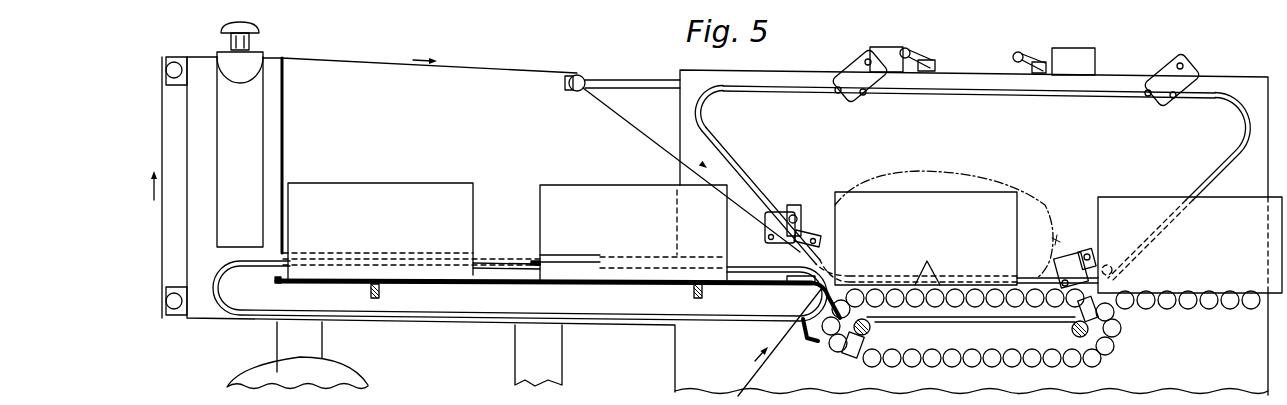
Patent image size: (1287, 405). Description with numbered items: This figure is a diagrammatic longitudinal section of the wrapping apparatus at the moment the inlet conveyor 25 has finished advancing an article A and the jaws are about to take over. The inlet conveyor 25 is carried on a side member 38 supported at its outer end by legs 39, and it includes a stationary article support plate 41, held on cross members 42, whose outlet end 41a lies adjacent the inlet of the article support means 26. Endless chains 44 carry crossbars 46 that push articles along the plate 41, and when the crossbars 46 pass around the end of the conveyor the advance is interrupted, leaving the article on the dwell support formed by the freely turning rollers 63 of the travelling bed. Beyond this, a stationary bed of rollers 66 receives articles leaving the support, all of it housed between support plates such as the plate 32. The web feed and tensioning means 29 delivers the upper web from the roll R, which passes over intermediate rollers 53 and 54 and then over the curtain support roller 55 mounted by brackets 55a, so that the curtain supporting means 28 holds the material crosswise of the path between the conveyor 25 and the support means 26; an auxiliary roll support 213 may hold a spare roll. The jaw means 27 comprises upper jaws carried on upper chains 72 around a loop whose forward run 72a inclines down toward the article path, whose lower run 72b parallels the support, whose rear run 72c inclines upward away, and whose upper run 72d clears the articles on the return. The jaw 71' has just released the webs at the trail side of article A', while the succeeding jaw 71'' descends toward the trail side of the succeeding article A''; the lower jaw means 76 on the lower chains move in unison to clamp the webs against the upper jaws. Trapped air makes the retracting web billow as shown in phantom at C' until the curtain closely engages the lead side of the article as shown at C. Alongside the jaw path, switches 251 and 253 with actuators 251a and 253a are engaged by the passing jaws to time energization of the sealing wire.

The inlet conveyor 25 is at (501, 246).
The article support means 26 is at (987, 283).
The jaw means 27 is at (795, 201).
The curtain supporting means 28 is at (563, 68).
The web feed and tensioning means 29 is at (276, 52).
The support plate 32 is at (1185, 351).
The side member 38 is at (468, 303).
The legs 39 is at (322, 338).
The article support plate 41 is at (598, 286).
The outlet end 41a is at (812, 292).
The cross members 42 is at (705, 298).
The chains 44 is at (596, 255).
The crossbars 46 is at (536, 262).
The intermediate roller 53 is at (164, 300).
The intermediate roller 54 is at (166, 70).
The curtain support roller 55 is at (578, 92).
The brackets 55a is at (623, 80).
The rollers 63 is at (927, 265).
The stationary bed of rollers 66 is at (1190, 293).
The upper jaw means 71' is at (1075, 247).
The succeeding upper jaw means 71'' is at (816, 207).
The upper chains 72 is at (760, 182).
The forward run 72a is at (737, 158).
The lower run 72b is at (896, 277).
The rear run 72c is at (1195, 178).
The upper run 72d is at (1014, 93).
The lower jaw means 76 is at (1105, 295).
The auxiliary roll support 213 is at (560, 355).
The normally open switch 251 is at (1082, 50).
The switch actuator 251a is at (1020, 52).
The normally closed switch 253 is at (883, 50).
The switch actuator 253a is at (915, 47).
The article A is at (510, 171).
The article A' is at (1201, 227).
The succeeding article A'' is at (943, 218).
The curtain position C is at (1032, 183).
The billowed web C' is at (1062, 176).
The roll R is at (340, 378).